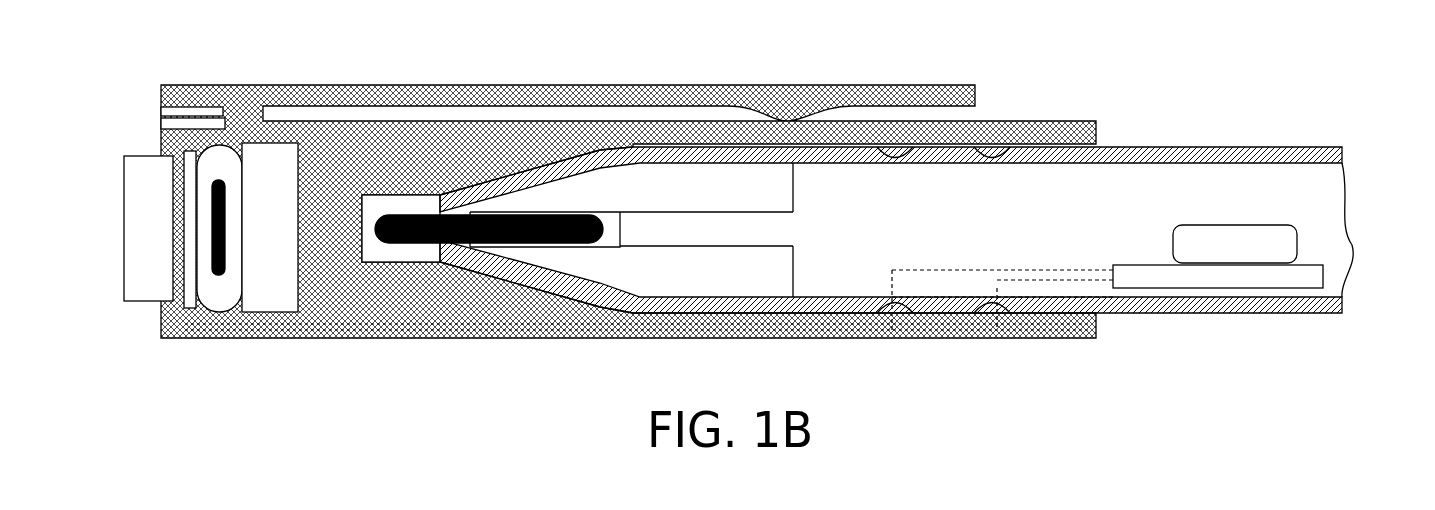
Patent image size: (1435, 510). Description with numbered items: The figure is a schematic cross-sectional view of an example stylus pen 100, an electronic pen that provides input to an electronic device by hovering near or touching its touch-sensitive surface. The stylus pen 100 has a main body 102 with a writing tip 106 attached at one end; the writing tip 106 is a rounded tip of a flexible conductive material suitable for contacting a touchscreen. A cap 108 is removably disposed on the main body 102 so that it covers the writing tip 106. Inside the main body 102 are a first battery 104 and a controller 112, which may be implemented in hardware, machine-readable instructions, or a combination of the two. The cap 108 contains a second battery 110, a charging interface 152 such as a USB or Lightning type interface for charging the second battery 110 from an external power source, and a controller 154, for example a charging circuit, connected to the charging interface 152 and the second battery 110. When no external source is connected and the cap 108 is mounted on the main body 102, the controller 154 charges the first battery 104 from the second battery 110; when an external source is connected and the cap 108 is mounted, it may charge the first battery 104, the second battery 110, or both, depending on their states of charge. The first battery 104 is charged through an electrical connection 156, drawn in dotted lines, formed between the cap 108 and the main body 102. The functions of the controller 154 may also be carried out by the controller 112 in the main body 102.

The stylus pen 100 is at (1117, 357).
The main body 102 is at (1208, 147).
The first battery 104 is at (1297, 245).
The writing tip 106 is at (412, 214).
The cap 108 is at (1020, 121).
The second battery 110 is at (284, 143).
The controller 112 is at (1323, 275).
The charging interface 152 is at (236, 145).
The controller 154 is at (190, 150).
The electrical connection 156 is at (997, 292).